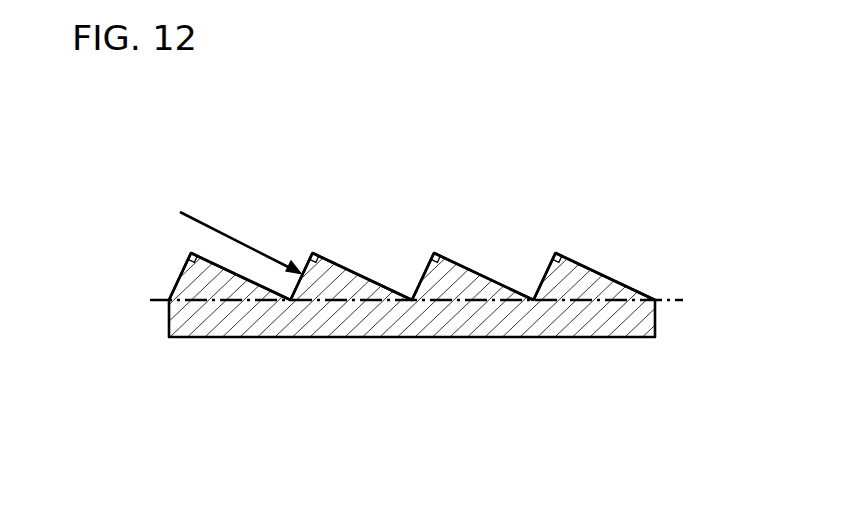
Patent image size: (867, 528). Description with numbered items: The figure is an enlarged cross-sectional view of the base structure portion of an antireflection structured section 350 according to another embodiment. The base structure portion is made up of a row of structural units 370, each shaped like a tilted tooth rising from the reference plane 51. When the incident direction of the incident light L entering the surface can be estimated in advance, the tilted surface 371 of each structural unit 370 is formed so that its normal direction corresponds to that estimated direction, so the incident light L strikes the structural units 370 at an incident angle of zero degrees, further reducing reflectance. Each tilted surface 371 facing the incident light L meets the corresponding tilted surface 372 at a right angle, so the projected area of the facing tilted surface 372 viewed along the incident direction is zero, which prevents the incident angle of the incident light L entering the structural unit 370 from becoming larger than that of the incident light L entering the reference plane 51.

The antireflection structured section 350 is at (572, 104).
The reference plane 51 is at (672, 298).
The structural unit 370 is at (391, 282).
The tilted surface 371 is at (306, 258).
The tilted surface 372 is at (353, 268).
The incident light L is at (213, 222).